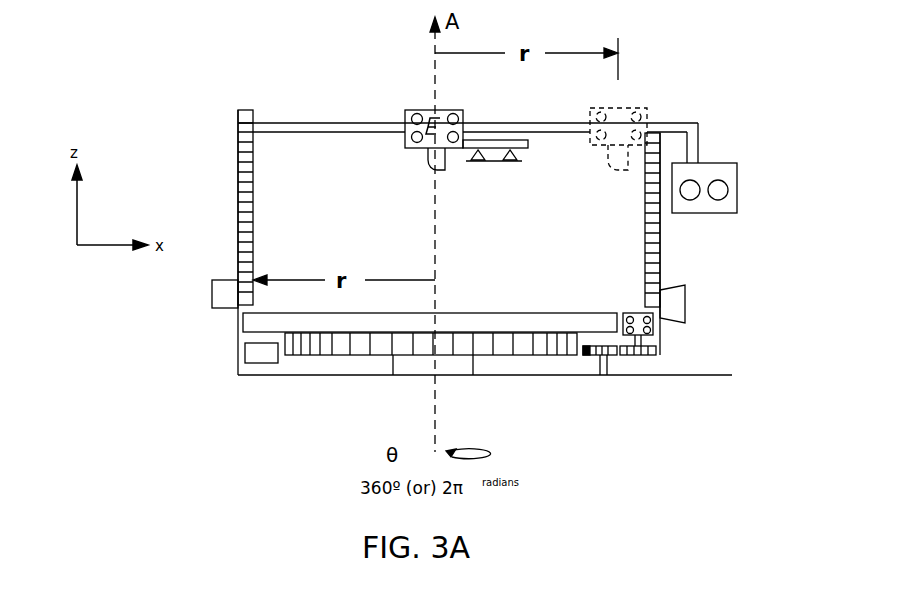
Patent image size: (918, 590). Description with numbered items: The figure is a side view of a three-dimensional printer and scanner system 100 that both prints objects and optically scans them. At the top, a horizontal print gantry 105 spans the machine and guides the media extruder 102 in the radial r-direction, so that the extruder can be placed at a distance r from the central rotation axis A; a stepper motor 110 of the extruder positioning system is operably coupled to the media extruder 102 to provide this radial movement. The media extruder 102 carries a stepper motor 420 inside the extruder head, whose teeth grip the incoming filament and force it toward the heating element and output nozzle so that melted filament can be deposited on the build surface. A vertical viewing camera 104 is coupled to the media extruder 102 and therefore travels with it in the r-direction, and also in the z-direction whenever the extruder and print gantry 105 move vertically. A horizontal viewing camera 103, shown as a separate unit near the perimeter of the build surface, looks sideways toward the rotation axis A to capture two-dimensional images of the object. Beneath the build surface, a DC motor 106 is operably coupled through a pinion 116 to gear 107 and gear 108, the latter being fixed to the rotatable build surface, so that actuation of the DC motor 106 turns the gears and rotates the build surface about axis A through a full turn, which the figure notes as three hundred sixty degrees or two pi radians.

The 3D printer and scanner system 100 is at (230, 86).
The media extruder 102 is at (405, 125).
The horizontal camera 103 is at (728, 163).
The vertical camera 104 is at (500, 140).
The print gantry 105 is at (280, 120).
The DC motor 106 is at (654, 330).
The gear 107 is at (610, 377).
The gear 108 is at (510, 357).
The stepper motor 110 is at (258, 365).
The pinion 116 is at (646, 357).
The stepper motor 420 is at (408, 128).